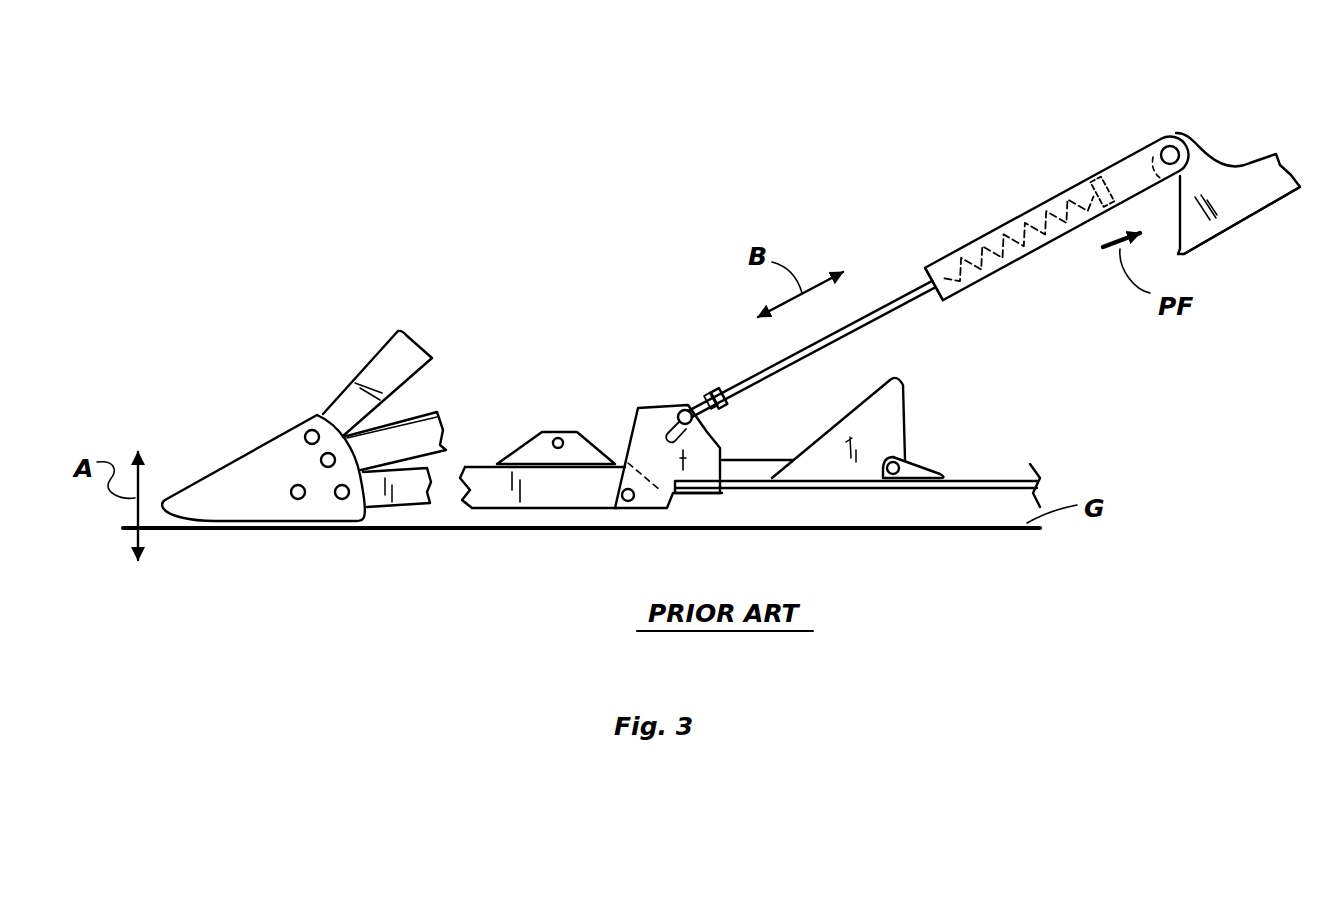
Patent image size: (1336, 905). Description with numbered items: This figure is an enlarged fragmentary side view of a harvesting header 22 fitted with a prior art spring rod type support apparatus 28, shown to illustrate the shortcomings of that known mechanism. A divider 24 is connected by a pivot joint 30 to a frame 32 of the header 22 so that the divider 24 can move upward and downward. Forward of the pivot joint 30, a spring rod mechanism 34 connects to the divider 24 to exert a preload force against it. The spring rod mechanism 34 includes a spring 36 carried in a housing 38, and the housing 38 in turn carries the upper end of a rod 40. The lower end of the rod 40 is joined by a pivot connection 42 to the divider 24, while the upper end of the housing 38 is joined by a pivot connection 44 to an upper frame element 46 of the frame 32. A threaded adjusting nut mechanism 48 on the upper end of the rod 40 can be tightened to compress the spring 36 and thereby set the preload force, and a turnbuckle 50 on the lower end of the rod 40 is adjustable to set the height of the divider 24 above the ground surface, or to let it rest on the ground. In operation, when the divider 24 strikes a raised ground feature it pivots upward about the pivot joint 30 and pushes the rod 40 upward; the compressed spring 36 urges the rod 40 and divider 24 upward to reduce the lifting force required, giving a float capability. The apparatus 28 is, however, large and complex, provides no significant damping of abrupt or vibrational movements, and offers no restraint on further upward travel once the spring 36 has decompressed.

The header 22 is at (1265, 155).
The divider 24 is at (490, 512).
The prior art spring rod type support apparatus 28 is at (881, 299).
The pivot joint 30 is at (900, 475).
The frame 32 is at (850, 489).
The spring rod mechanism 34 is at (912, 290).
The spring 36 is at (998, 237).
The housing 38 is at (1060, 238).
The rod 40 is at (901, 306).
The pivot connection 42 is at (688, 405).
The pivot connection 44 is at (1170, 136).
The upper frame element 46 is at (1267, 210).
The threaded adjusting nut mechanism 48 is at (1096, 182).
The turnbuckle 50 is at (716, 388).